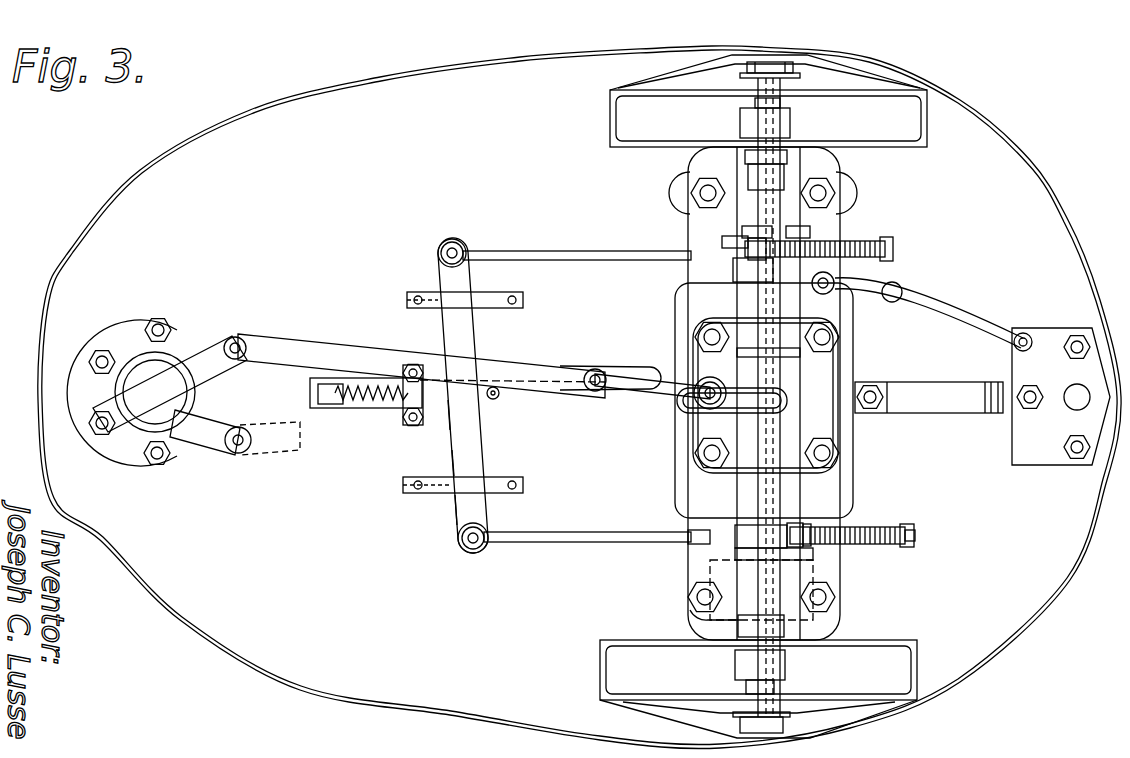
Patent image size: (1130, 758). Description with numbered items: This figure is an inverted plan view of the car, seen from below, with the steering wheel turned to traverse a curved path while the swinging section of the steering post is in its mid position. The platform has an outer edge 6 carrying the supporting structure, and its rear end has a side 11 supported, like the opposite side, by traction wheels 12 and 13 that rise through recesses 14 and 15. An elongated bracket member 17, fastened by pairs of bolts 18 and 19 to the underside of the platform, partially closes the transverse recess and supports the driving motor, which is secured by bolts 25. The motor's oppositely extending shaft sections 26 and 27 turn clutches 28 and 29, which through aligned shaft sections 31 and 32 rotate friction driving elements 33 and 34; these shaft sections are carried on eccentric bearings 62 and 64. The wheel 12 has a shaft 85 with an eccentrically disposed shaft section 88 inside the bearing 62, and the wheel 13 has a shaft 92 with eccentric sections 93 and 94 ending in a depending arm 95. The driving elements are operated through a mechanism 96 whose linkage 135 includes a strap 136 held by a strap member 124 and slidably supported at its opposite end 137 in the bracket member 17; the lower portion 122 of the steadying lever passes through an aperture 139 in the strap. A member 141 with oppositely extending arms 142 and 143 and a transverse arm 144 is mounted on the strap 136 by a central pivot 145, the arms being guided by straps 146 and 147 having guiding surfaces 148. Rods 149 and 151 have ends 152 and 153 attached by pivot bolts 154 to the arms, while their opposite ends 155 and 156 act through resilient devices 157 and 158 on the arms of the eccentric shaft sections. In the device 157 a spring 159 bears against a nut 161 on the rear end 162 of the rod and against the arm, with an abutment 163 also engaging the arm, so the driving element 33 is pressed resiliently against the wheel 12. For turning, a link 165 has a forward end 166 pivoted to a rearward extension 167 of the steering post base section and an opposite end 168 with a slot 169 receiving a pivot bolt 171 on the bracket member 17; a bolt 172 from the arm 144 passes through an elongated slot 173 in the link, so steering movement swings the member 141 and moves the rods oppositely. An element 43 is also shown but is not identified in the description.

The outer edge 6 is at (790, 76).
The side of rear end 11 is at (690, 50).
The traction wheel 12 is at (758, 670).
The traction wheel 13 is at (912, 118).
The recess 14 is at (918, 648).
The recess 15 is at (925, 92).
The bracket member 17 is at (840, 166).
The bolts 18 is at (690, 193).
The bolts 19 is at (688, 598).
The bolts 25 is at (700, 332).
The shaft section 26 is at (735, 524).
The shaft section 27 is at (733, 272).
The clutch 28 is at (710, 571).
The clutch 29 is at (722, 241).
The shaft section 31 is at (752, 612).
The shaft section 32 is at (745, 160).
The friction driving element 33 is at (786, 665).
The friction driving element 34 is at (790, 119).
The nut 43 is at (835, 628).
The eccentric bearing 62 is at (813, 566).
The eccentric bearing 64 is at (836, 193).
The shaft 85 is at (810, 234).
The eccentric shaft section 88 is at (745, 614).
The shaft 92 is at (786, 78).
The eccentric shaft section 93 is at (740, 116).
The eccentric shaft section 94 is at (748, 190).
The depending arm 95 is at (742, 232).
The mechanism 96 is at (445, 326).
The lower end portion of lever 122 is at (310, 396).
The strap member 124 is at (403, 423).
The linkage 135 is at (448, 405).
The strap 136 is at (370, 401).
The end of strap 137 is at (703, 406).
The aperture 139 is at (320, 403).
The pivoted member 141 is at (454, 466).
The arm 142 is at (460, 514).
The arm 143 is at (440, 270).
The transverse arm 144 is at (640, 365).
The pivot 145 is at (495, 399).
The guide strap 146 is at (440, 489).
The guide strap 147 is at (418, 293).
The guiding surfaces 148 is at (490, 301).
The rod 149 is at (576, 543).
The rod 151 is at (590, 252).
The rod end 152 is at (490, 546).
The rod end 153 is at (455, 248).
The pivot bolts 154 is at (462, 540).
The rod end 155 is at (850, 546).
The rod end 156 is at (880, 283).
The resilient device 157 is at (845, 526).
The resilient device 158 is at (846, 244).
The spring 159 is at (892, 528).
The nut 161 is at (914, 534).
The rear end of rod 162 is at (915, 541).
The abutment 163 is at (692, 543).
The link 165 is at (310, 345).
The forward end of link 166 is at (183, 392).
The rearward extension 167 is at (235, 338).
The opposite end of link 168 is at (768, 363).
The slot 169 is at (762, 413).
The pivot bolt 171 is at (700, 397).
The bolt 172 is at (592, 375).
The elongated slot 173 is at (594, 393).